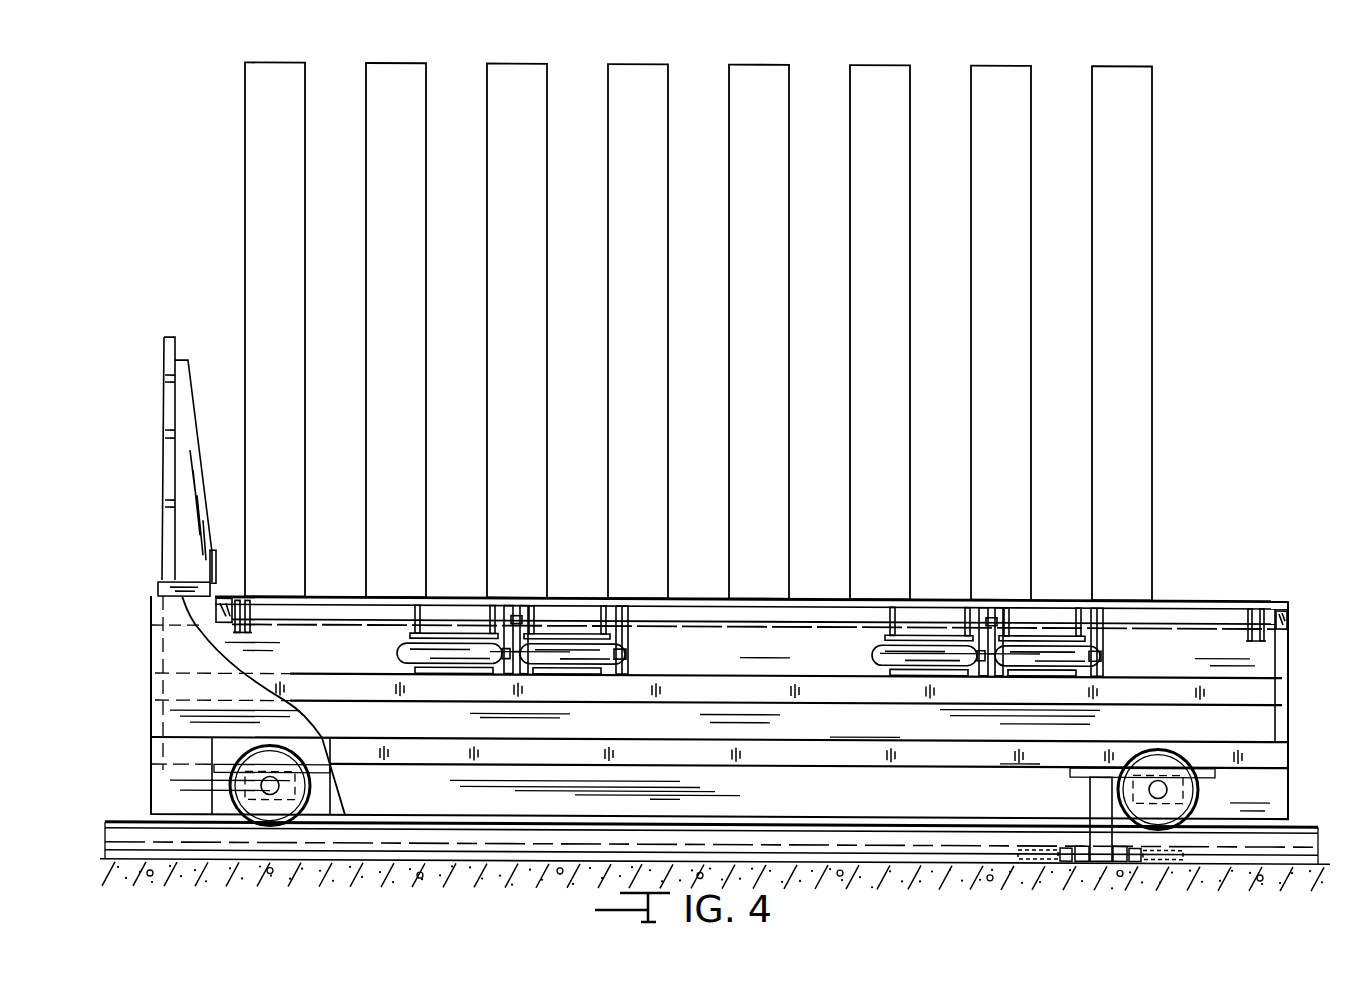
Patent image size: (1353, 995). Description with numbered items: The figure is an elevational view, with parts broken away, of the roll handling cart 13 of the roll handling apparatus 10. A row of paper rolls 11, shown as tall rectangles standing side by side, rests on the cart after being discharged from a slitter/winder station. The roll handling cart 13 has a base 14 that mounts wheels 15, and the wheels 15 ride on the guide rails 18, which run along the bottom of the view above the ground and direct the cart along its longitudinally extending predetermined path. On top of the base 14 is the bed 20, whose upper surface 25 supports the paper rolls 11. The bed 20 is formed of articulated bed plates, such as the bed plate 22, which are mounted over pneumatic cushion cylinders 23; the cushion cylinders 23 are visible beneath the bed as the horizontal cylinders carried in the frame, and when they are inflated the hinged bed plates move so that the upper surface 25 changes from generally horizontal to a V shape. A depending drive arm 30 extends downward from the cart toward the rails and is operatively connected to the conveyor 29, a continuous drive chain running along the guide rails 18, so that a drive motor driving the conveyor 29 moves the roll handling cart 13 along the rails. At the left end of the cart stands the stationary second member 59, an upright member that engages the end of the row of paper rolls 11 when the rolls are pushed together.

The roll handling apparatus 10 is at (690, 597).
The paper rolls 11 is at (246, 172).
The roll handling cart 13 is at (1286, 708).
The base 14 is at (822, 730).
The wheels 15 is at (345, 800).
The guide rails 18 is at (120, 821).
The bed 20 is at (445, 594).
The bed plate 22 is at (325, 596).
The pneumatic cushion cylinders 23 is at (397, 654).
The upper surface 25 is at (870, 596).
The conveyor 29 is at (1025, 848).
The drive arm 30 is at (1090, 798).
The stationary second member 59 is at (163, 485).